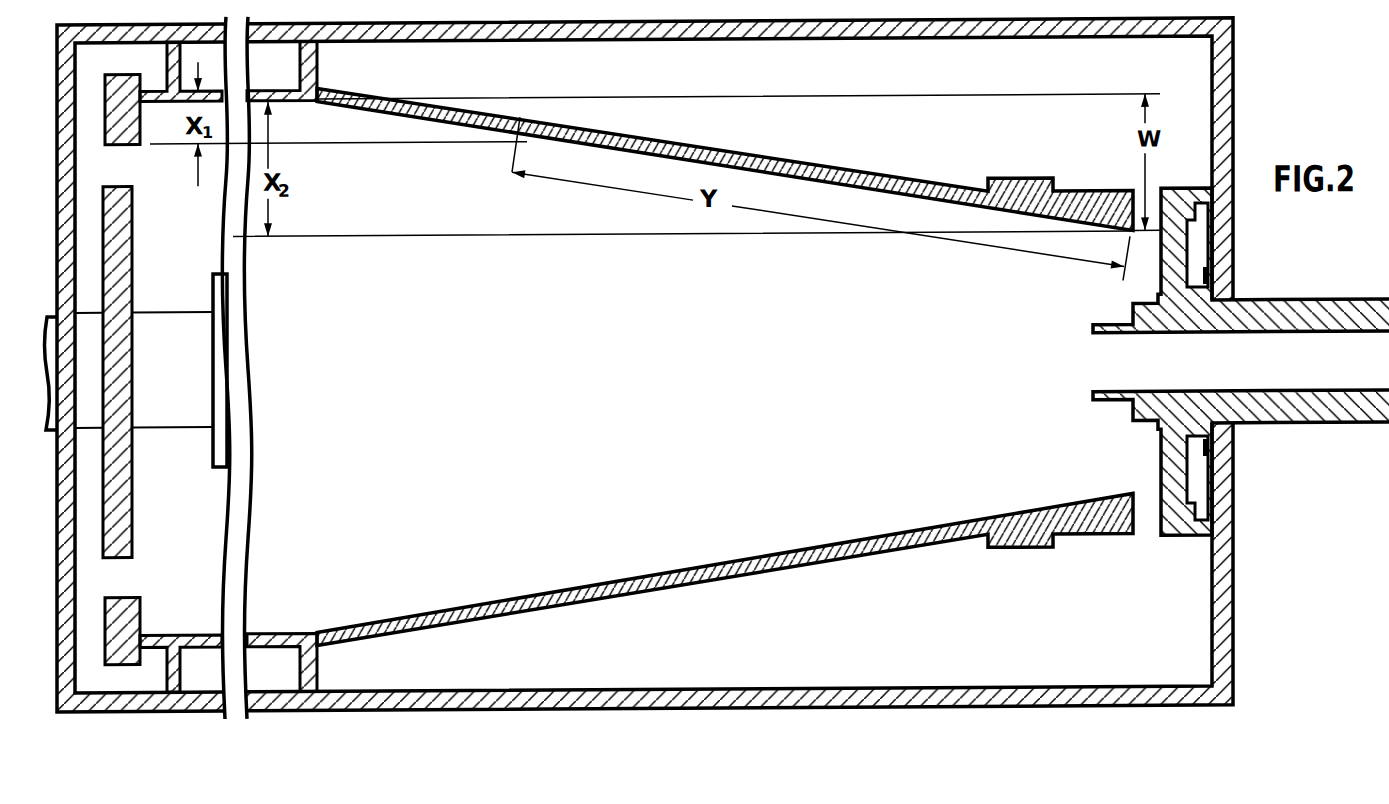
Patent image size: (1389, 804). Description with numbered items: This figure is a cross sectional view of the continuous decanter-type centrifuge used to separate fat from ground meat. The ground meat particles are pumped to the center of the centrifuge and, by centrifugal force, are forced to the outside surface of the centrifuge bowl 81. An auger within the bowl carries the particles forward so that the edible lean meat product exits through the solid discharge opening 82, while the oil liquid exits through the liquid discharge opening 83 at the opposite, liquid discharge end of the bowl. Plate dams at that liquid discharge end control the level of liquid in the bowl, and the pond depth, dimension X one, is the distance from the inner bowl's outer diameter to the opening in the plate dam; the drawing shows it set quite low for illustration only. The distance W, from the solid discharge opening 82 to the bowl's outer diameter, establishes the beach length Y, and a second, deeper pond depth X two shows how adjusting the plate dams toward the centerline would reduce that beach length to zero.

The centrifuge bowl 81 is at (283, 108).
The solid discharge opening 82 is at (1152, 236).
The liquid discharge opening 83 is at (122, 163).